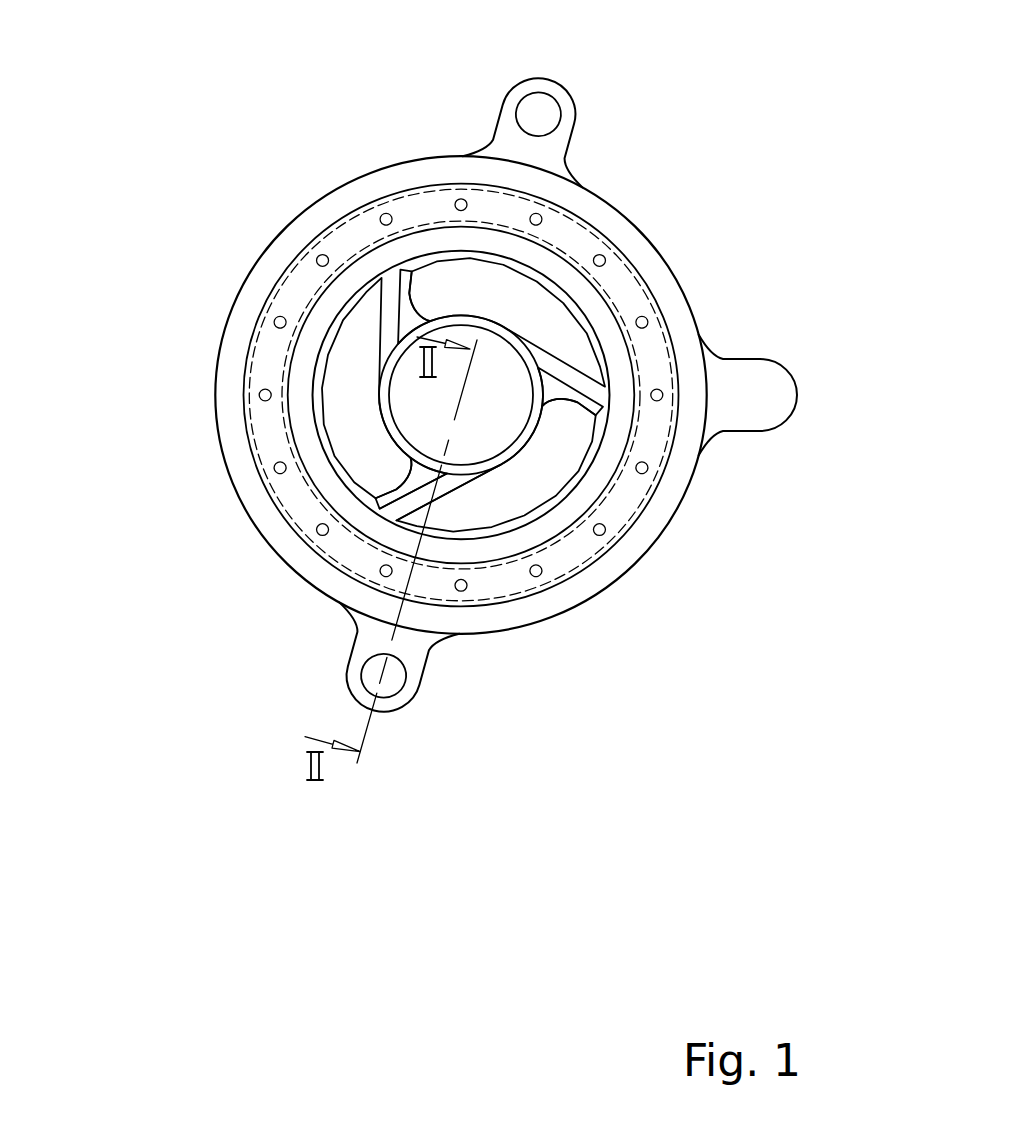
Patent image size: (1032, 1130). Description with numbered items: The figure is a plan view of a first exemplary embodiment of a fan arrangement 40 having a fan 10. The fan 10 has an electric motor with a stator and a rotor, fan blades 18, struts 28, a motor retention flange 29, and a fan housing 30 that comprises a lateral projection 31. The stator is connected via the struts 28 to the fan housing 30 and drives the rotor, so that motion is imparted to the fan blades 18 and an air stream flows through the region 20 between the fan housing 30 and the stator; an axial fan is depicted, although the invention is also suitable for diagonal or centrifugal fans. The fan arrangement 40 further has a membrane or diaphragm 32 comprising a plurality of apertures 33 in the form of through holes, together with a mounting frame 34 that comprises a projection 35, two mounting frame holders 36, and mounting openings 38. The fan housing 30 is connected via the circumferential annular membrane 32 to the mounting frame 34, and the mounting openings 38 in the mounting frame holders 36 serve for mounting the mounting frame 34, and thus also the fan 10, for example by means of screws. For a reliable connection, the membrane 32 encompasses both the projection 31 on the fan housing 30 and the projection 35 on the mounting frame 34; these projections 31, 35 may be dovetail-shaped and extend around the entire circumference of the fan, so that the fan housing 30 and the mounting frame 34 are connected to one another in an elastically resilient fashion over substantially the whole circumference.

The fan 10 is at (503, 440).
The fan blades 18 is at (543, 322).
The region 20 is at (575, 399).
The struts 28 is at (373, 483).
The motor retention flange 29 is at (413, 407).
The fan housing 30 is at (483, 553).
The lateral projection 31 is at (287, 345).
The membrane 32 is at (652, 442).
The apertures 33 is at (599, 534).
The mounting frame 34 is at (690, 365).
The projection 35 is at (317, 243).
The mounting frame holder 36 is at (550, 152).
The mounting opening 38 is at (540, 115).
The fan arrangement 40 is at (613, 242).